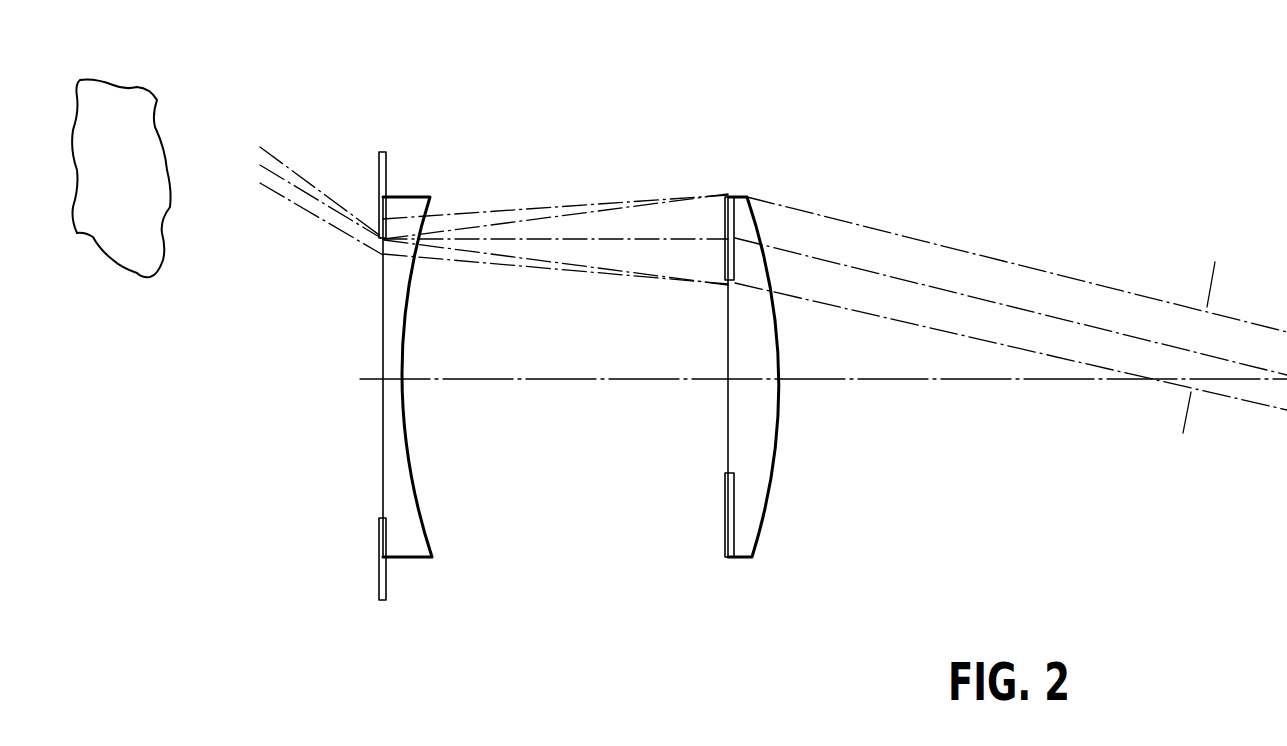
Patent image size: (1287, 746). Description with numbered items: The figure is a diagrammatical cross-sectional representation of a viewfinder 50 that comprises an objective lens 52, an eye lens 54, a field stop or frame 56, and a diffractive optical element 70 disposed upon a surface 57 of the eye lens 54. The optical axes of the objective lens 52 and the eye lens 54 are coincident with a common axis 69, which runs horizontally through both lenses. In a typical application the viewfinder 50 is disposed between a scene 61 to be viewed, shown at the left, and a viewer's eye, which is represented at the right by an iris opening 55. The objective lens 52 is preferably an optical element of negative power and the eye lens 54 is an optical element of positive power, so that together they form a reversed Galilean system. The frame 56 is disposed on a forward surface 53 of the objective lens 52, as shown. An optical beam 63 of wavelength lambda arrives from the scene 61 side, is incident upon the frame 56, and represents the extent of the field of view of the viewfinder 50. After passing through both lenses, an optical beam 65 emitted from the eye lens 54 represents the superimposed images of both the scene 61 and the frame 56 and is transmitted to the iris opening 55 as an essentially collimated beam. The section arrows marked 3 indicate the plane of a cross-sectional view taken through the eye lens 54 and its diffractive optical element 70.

The viewfinder 50 is at (787, 652).
The objective lens 52 is at (398, 353).
The forward surface 53 is at (383, 443).
The eye lens 54 is at (735, 397).
The iris opening 55 is at (1212, 280).
The field stop or frame 56 is at (378, 165).
The surface of eye lens 57 is at (727, 349).
The scene 61 is at (123, 84).
The optical beam 63 is at (286, 150).
The optical beam 65 is at (1034, 254).
The common axis 69 is at (834, 380).
The diffractive optical element 70 is at (725, 270).
The section line for FIG. 3 is at (674, 185).